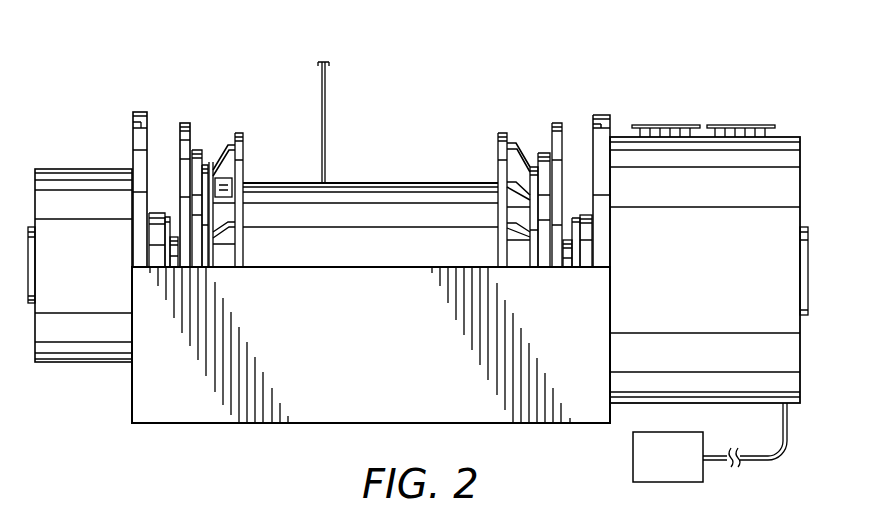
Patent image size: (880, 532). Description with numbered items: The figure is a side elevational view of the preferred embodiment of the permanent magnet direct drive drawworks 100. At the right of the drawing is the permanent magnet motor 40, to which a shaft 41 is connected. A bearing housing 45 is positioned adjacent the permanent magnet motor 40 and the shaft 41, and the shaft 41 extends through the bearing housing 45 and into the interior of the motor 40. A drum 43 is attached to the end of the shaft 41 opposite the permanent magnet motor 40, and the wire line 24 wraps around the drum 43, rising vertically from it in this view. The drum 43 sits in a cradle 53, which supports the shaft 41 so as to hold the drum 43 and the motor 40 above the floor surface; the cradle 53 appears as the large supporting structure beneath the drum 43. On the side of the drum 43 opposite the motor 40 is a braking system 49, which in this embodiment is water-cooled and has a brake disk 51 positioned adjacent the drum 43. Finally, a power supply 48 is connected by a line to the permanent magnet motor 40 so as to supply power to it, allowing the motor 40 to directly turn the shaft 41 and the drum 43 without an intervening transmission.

The permanent magnet direct drive drawworks 100 is at (214, 60).
The braking system 49 is at (78, 168).
The cradle 53 is at (135, 112).
The shaft 41 is at (169, 236).
The brake disk 51 is at (186, 123).
The wire line 24 is at (325, 112).
The drum 43 is at (397, 183).
The bearing housing 45 is at (583, 215).
The permanent magnet motor 40 is at (778, 137).
The power supply 48 is at (670, 482).